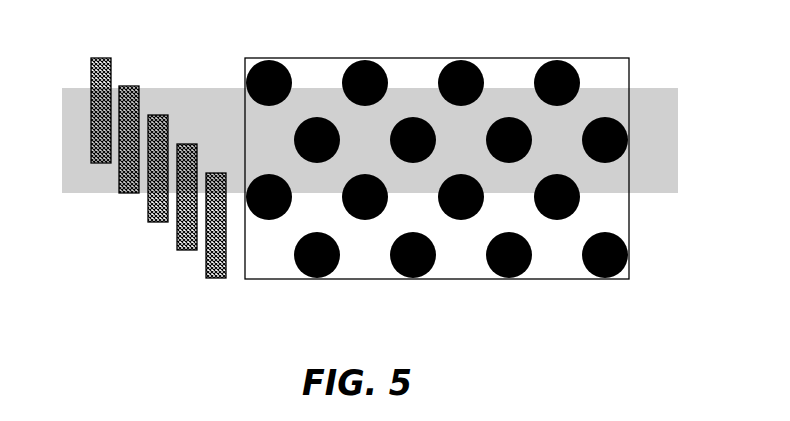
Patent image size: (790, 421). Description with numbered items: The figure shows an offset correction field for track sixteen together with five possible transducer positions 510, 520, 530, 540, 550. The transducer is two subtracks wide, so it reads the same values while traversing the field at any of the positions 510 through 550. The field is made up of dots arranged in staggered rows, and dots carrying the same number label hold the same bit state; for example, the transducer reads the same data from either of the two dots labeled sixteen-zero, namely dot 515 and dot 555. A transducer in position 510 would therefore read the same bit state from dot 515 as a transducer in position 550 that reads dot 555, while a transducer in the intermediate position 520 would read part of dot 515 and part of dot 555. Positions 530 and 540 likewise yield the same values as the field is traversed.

The transducer position 510 is at (100, 164).
The transducer position 520 is at (129, 194).
The transducer position 530 is at (157, 223).
The transducer position 540 is at (187, 251).
The transducer position 550 is at (215, 279).
The dot labeled [16,0] 515 is at (424, 151).
The dot labeled [16,0] 555 is at (291, 211).